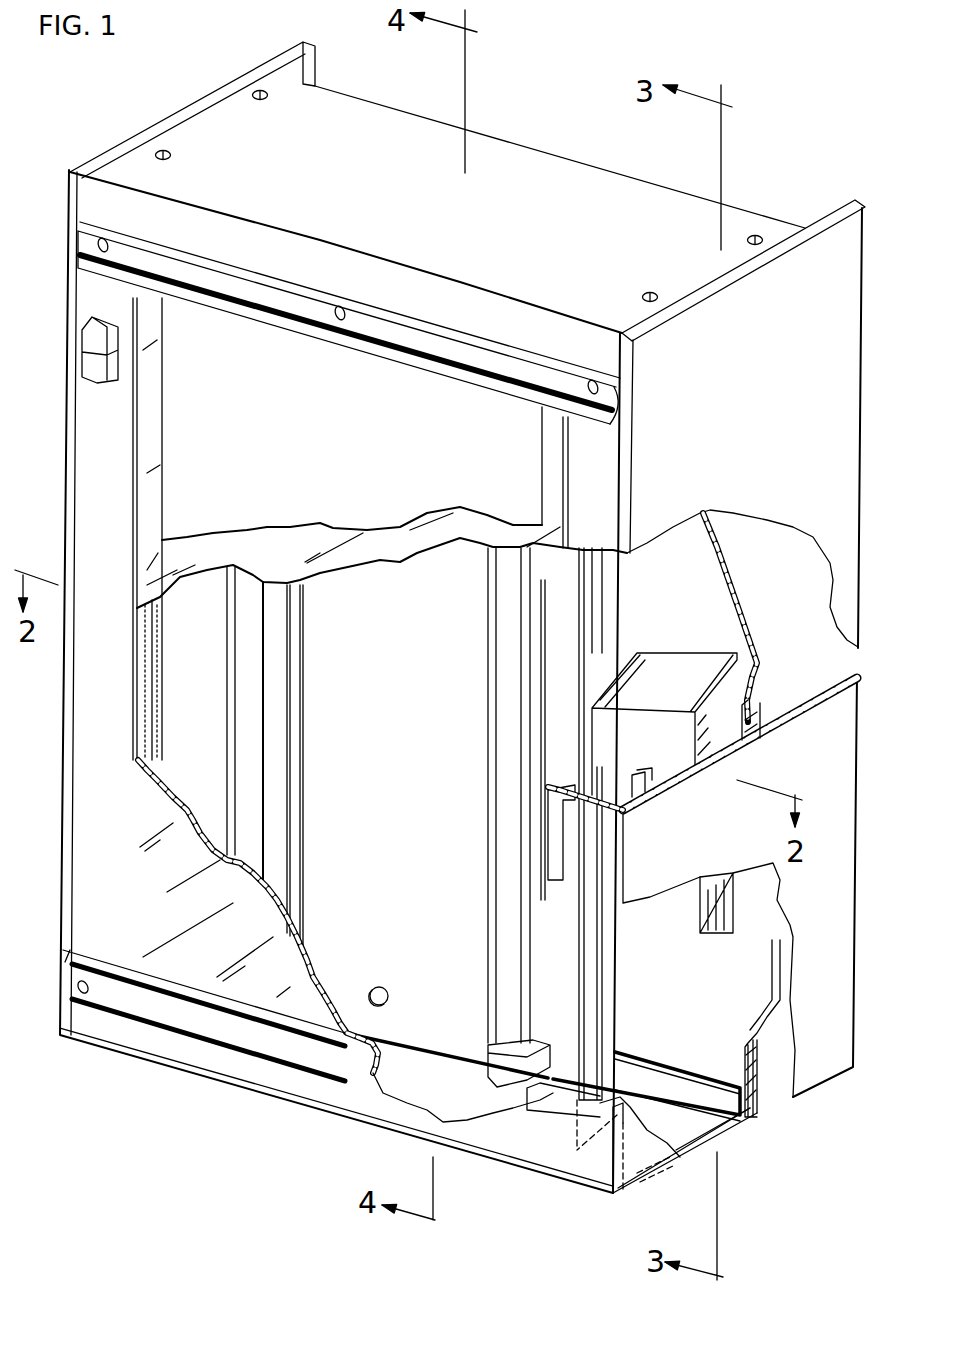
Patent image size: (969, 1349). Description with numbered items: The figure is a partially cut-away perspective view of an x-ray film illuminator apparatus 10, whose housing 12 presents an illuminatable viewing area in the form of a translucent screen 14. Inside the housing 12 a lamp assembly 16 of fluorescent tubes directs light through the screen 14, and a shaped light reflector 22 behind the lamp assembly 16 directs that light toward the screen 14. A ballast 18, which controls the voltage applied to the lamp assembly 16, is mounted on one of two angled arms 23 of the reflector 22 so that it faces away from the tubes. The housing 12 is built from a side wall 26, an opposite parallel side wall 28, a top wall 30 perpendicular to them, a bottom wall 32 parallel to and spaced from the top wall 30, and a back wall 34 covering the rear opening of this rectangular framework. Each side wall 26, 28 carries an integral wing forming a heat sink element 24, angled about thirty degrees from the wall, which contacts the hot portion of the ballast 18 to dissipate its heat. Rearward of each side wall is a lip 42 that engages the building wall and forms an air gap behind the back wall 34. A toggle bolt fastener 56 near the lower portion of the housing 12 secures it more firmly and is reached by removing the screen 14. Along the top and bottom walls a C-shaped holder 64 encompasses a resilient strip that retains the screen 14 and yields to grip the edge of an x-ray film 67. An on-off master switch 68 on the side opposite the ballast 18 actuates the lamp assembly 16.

The apparatus 10 is at (755, 450).
The housing 12 is at (50, 843).
The translucent screen 14 is at (148, 415).
The lamp assembly 16 is at (403, 1075).
The ballast 18 is at (665, 667).
The light reflector 22 is at (408, 715).
The angled arms 23 is at (180, 693).
The heat sink element 24 is at (757, 745).
The side wall 26 is at (69, 202).
The side wall 28 is at (737, 342).
The top wall 30 is at (513, 163).
The bottom wall 32 is at (702, 1125).
The back wall 34 is at (733, 1065).
The lip 42 is at (283, 53).
The toggle bolt fastener 56 is at (385, 990).
The C-shaped holder 64 is at (88, 263).
The x-ray film 67 is at (173, 443).
The on-off master switch 68 is at (88, 340).